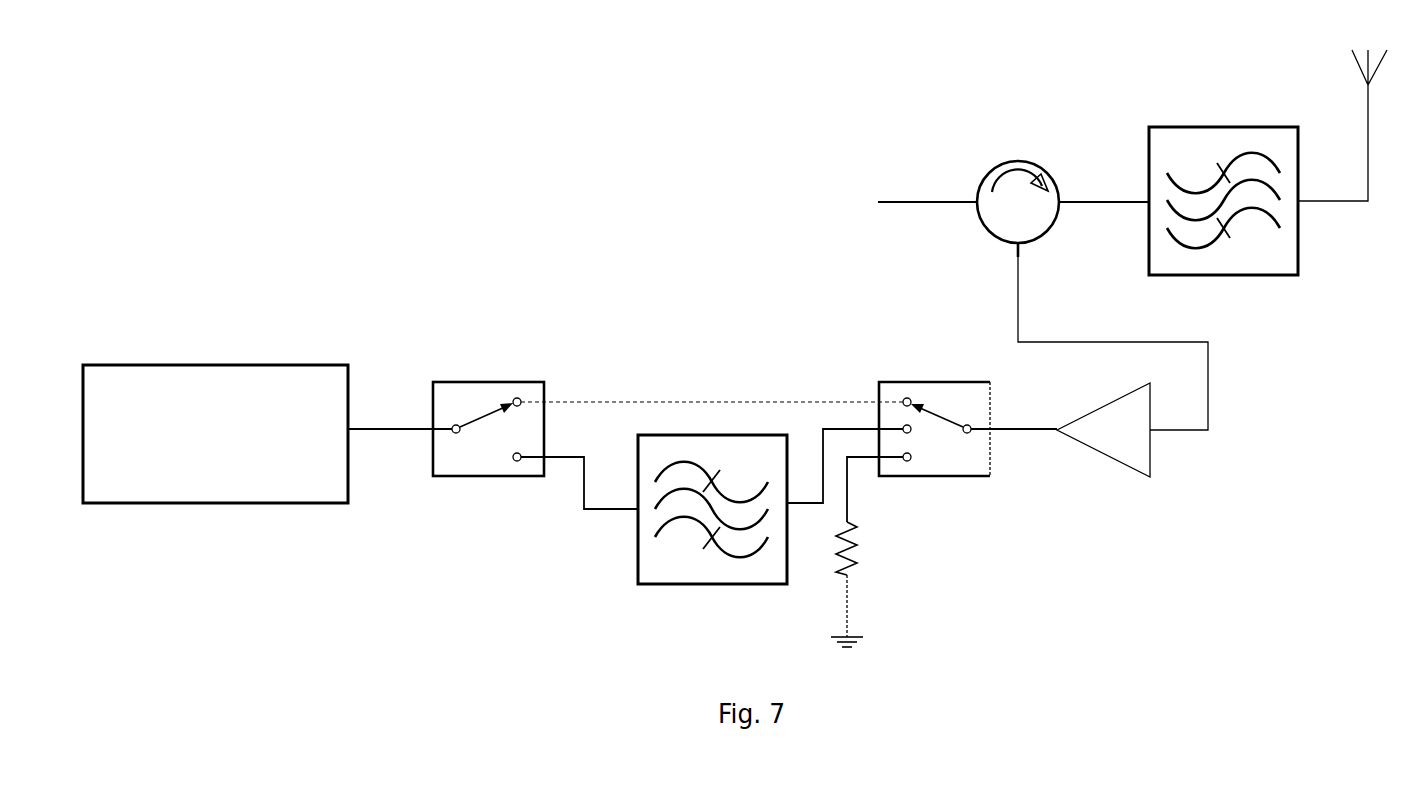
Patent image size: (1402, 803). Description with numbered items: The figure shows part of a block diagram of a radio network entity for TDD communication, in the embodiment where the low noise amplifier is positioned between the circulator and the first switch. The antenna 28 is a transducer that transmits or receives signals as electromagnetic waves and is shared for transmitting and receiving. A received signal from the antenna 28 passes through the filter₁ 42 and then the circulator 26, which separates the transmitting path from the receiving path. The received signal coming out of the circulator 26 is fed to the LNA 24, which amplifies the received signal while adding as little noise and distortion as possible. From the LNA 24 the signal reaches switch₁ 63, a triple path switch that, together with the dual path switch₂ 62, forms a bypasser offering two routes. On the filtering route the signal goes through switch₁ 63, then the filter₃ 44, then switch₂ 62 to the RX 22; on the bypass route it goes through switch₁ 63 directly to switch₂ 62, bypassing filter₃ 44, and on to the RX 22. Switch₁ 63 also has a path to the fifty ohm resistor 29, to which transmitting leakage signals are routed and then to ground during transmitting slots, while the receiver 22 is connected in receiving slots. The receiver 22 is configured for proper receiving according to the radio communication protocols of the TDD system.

The receiver 22 is at (190, 364).
The switch₂ 62 is at (505, 477).
The filter₃ 44 is at (637, 548).
The switch₁ 63 is at (913, 476).
The low noise amplifier 24 is at (1152, 457).
The circulator 26 is at (1037, 242).
The filter₁ 42 is at (1252, 275).
The antenna 28 is at (1357, 65).
The 50 ohm resistor 29 is at (855, 543).